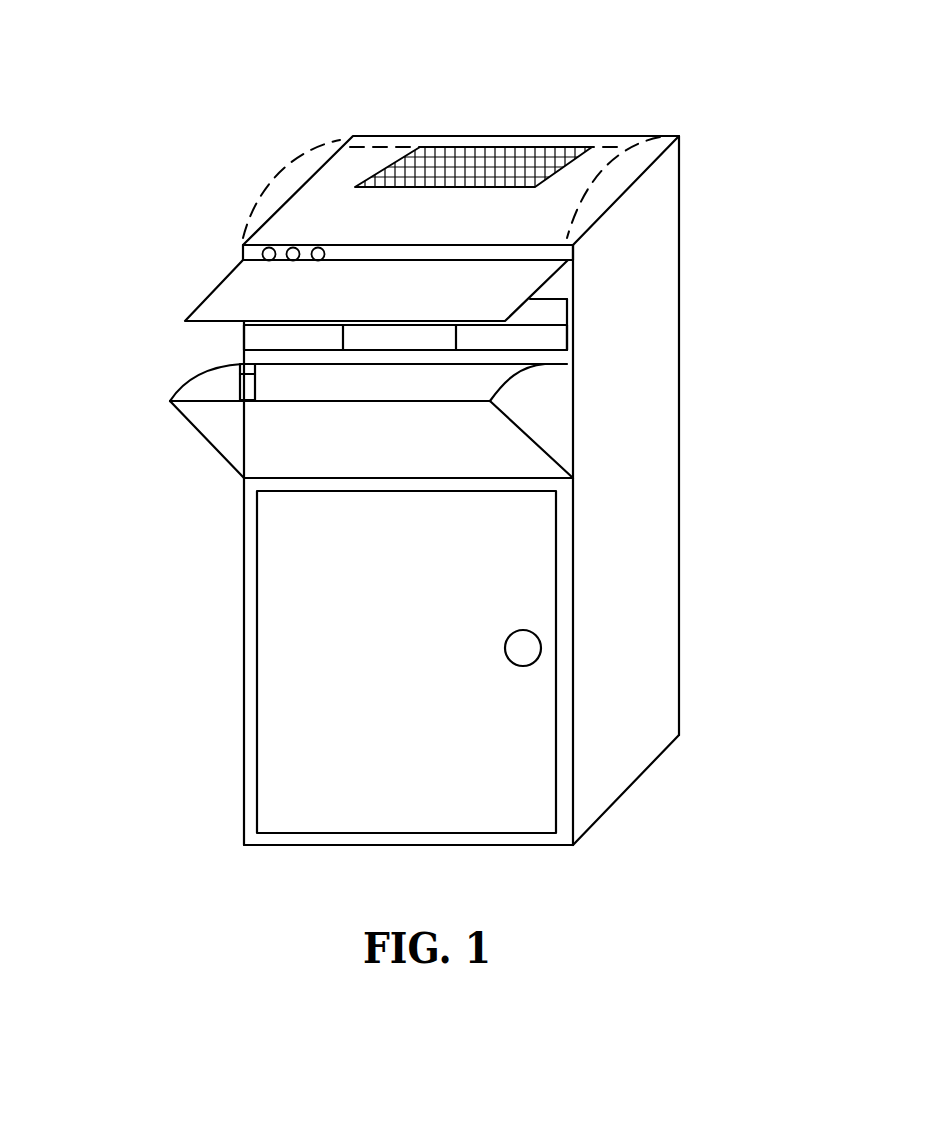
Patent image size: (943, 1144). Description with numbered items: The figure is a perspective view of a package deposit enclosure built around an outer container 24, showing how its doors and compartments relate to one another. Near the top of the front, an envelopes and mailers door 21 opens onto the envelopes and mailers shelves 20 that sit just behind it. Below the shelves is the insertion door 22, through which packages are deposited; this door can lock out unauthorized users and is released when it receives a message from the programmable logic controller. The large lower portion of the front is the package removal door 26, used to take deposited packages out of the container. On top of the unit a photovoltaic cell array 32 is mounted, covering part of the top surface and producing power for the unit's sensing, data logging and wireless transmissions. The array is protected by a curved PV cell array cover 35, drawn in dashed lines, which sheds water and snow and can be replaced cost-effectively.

The Envelopes and Mailers shelves 20 is at (243, 338).
The Envelopes and Mailers door 21 is at (503, 290).
The insertion door 22 is at (493, 443).
The outer container 24 is at (630, 590).
The Package Removal Door 26 is at (322, 653).
The photovoltaic cell array 32 is at (488, 160).
The PV Cell Array Cover 35 is at (277, 170).